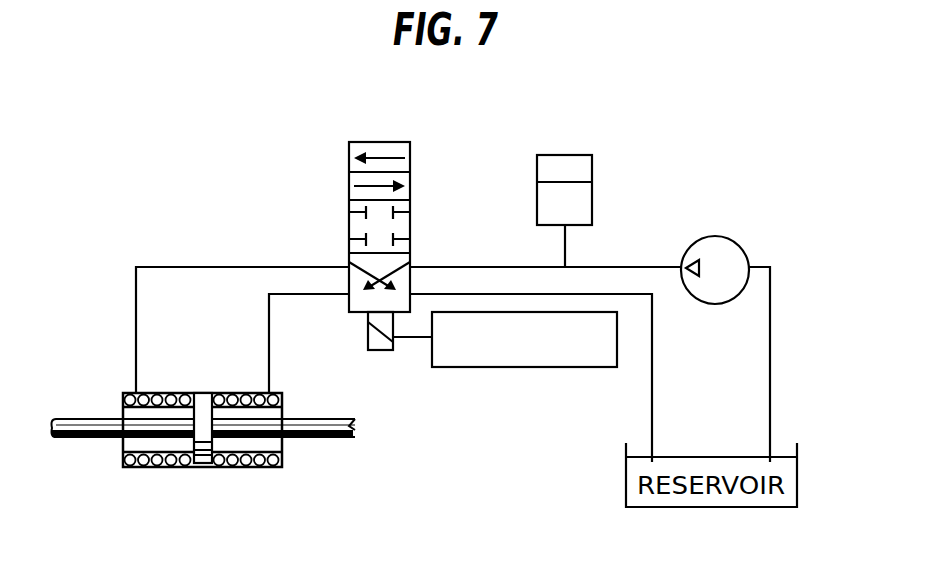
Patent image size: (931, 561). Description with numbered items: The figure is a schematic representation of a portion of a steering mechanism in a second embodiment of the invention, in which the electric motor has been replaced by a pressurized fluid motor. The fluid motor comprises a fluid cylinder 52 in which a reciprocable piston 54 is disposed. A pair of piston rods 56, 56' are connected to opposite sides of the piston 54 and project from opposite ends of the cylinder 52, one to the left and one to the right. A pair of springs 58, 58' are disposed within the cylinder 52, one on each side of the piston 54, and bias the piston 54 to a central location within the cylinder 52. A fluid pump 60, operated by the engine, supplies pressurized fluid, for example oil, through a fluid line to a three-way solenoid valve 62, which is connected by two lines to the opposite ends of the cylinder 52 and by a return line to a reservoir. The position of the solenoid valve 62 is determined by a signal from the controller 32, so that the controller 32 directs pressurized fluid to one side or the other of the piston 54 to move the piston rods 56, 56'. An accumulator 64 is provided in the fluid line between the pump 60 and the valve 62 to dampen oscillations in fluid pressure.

The three-way solenoid valve 62 is at (409, 144).
The accumulator 64 is at (580, 155).
The fluid pump 60 is at (722, 238).
The controller 32 is at (512, 369).
The fluid cylinder 52 is at (150, 474).
The piston 54 is at (203, 468).
The piston rod 56 is at (204, 474).
The piston rod 56' is at (318, 381).
The spring 58 is at (202, 374).
The spring 58' is at (202, 492).